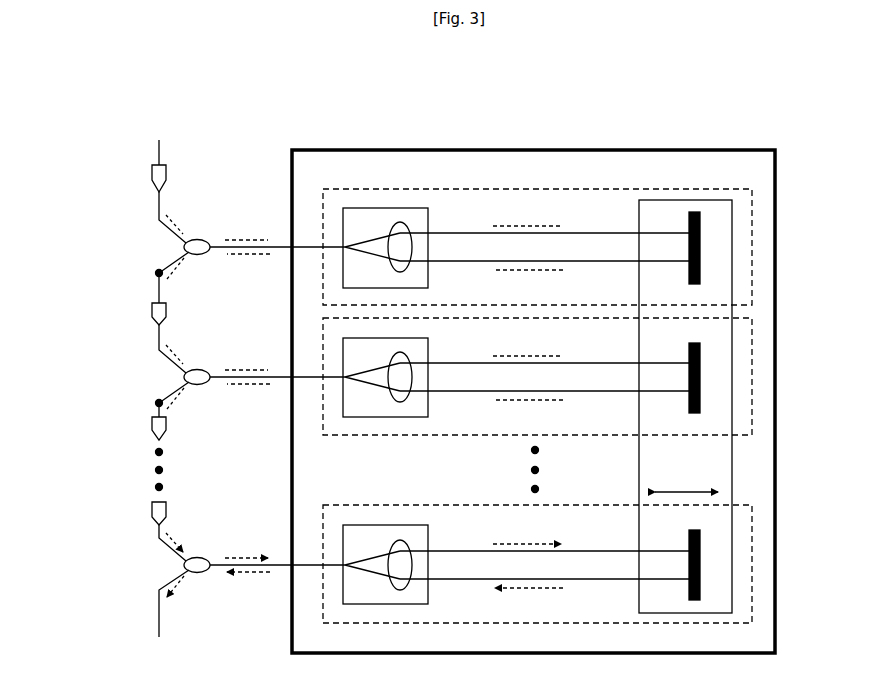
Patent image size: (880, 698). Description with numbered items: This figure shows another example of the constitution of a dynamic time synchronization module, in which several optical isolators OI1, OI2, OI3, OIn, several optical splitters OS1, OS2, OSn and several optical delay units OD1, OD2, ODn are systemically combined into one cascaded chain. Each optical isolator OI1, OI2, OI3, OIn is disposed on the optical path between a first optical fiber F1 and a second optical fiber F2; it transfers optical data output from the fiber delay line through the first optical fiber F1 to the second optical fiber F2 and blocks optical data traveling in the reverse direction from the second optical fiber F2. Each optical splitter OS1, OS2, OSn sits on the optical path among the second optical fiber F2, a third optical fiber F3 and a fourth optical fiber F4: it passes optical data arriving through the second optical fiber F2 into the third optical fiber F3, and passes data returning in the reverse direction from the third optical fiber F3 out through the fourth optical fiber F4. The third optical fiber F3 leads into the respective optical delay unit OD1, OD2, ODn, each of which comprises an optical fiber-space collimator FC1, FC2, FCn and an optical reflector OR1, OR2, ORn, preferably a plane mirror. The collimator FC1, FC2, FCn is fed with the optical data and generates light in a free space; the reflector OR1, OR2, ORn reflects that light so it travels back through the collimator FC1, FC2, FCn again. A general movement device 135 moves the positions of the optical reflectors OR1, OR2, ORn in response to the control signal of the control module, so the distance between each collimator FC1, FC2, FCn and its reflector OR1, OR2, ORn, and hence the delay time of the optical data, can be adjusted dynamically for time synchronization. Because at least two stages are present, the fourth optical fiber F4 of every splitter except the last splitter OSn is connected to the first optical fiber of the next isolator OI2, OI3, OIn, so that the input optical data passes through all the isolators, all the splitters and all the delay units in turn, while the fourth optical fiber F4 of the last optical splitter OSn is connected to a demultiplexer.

The movement device 135 is at (732, 478).
The optical delay unit OD1 is at (752, 247).
The optical delay unit OD2 is at (752, 377).
The optical delay unit ODn is at (752, 566).
The optical fiber-space collimator FC1 is at (385, 207).
The optical fiber-space collimator FC2 is at (385, 418).
The optical fiber-space collimator FCn is at (385, 605).
The optical reflector OR1 is at (693, 211).
The optical reflector OR2 is at (695, 414).
The optical reflector ORn is at (693, 601).
The optical isolator OI1 is at (150, 176).
The optical isolator OI2 is at (150, 308).
The optical isolator OI3 is at (150, 426).
The optical isolator OIn is at (150, 511).
The optical splitter OS1 is at (200, 240).
The optical splitter OS2 is at (200, 370).
The optical splitter OSn is at (200, 558).
The first optical fiber F1 is at (161, 150).
The second optical fiber F2 is at (170, 240).
The third optical fiber F3 is at (283, 247).
The fourth optical fiber F4 is at (170, 262).